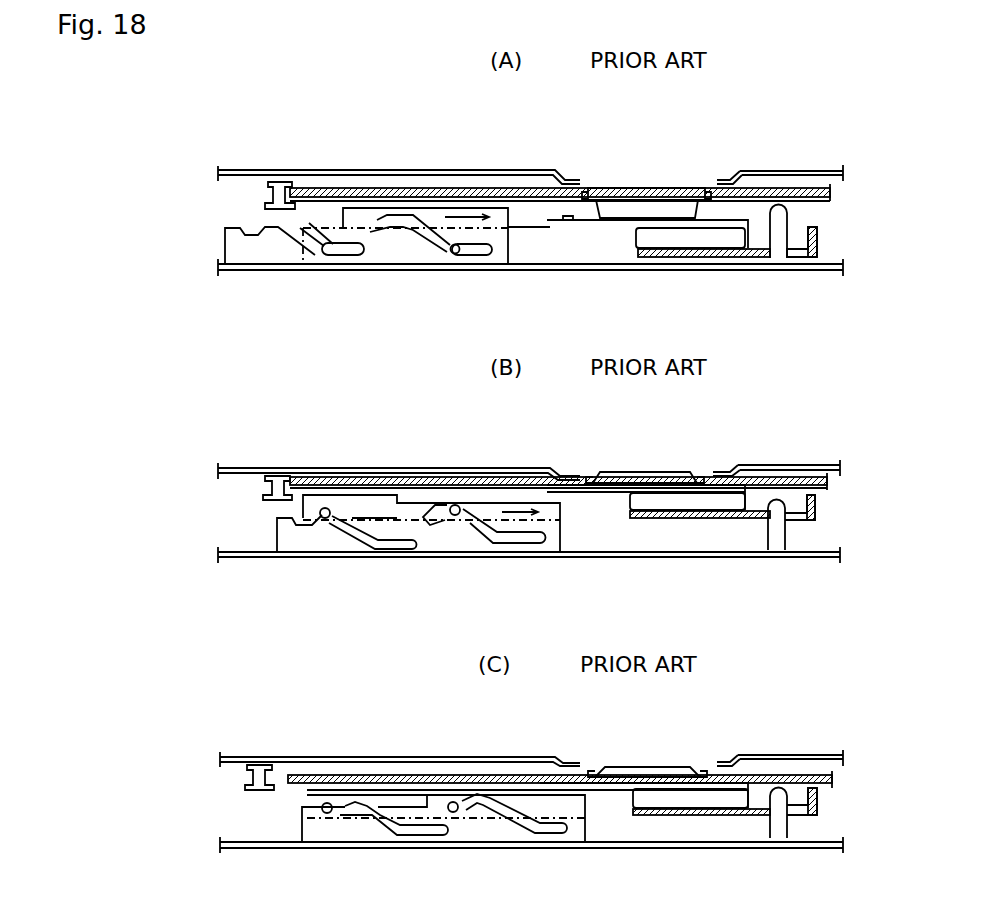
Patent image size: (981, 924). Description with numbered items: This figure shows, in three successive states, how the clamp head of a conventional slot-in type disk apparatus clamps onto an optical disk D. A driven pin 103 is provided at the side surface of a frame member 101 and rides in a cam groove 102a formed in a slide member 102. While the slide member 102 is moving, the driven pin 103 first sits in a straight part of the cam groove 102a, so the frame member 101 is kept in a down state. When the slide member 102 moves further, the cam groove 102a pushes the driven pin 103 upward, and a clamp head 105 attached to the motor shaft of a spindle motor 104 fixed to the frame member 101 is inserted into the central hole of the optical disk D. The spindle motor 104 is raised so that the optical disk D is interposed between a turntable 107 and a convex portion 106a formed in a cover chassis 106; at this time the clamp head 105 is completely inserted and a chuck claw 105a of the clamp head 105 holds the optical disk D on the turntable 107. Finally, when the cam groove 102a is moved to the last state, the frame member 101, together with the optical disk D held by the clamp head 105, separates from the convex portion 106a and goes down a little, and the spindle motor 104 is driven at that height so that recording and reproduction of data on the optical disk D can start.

The frame member 101 is at (818, 240).
The slide member 102 is at (396, 238).
The cam groove 102a is at (423, 215).
The driven pin 103 is at (454, 254).
The spindle motor 104 is at (700, 242).
The clamp head 105 is at (644, 205).
The chuck claw 105a is at (590, 190).
The cover chassis 106 is at (822, 171).
The convex portion 106a is at (730, 178).
The turntable 107 is at (572, 222).
The optical disk D is at (512, 192).